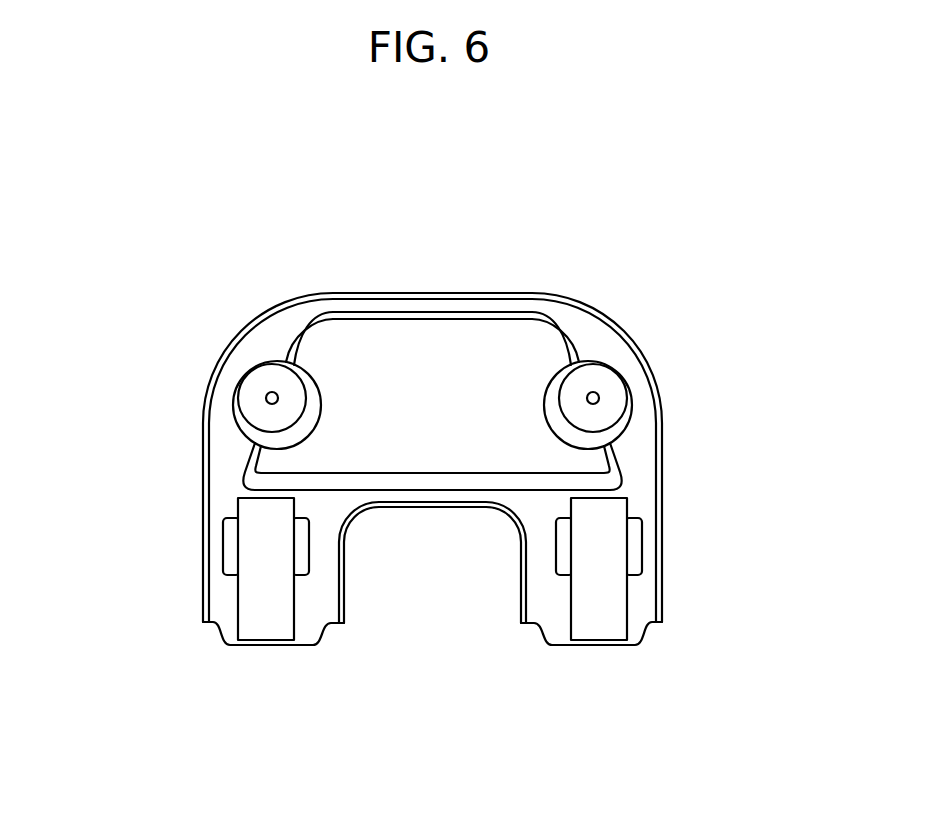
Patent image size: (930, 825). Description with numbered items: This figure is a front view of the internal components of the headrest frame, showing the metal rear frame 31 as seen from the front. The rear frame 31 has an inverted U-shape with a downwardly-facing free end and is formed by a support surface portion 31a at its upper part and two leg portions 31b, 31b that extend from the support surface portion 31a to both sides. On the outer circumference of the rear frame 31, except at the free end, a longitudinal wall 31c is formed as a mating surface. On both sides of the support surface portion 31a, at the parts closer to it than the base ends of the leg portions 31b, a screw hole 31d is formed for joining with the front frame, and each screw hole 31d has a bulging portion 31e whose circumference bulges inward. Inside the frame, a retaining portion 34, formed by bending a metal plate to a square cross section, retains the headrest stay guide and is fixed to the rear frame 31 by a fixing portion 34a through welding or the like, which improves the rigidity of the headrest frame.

The rear frame 31 is at (255, 227).
The support surface portion 31a is at (440, 372).
The leg portion 31b is at (223, 597).
The longitudinal wall 31c is at (608, 323).
The screw hole 31d is at (265, 400).
The bulging portion 31e is at (262, 378).
The retaining portion 34 is at (263, 612).
The fixing portion 34a is at (231, 547).